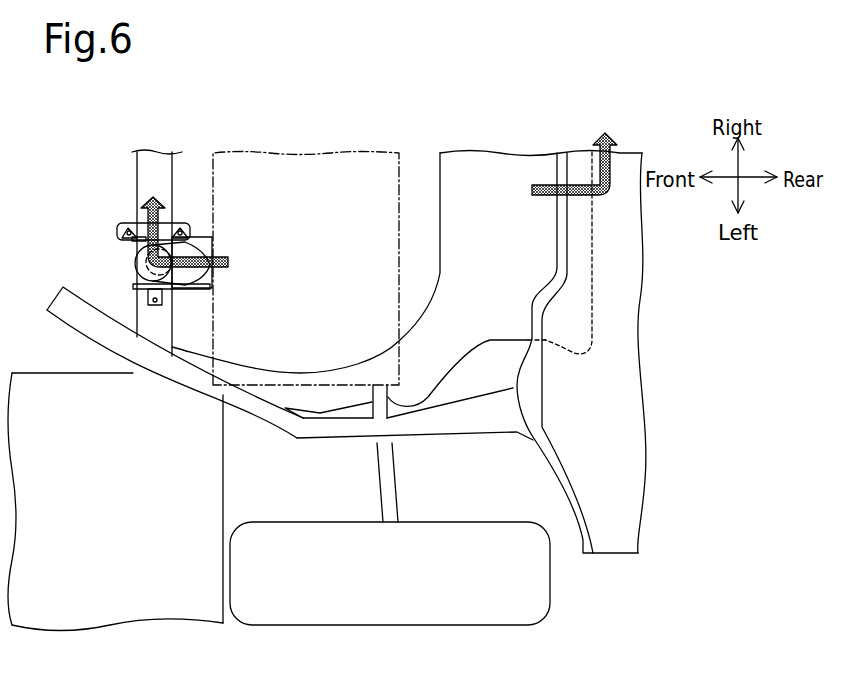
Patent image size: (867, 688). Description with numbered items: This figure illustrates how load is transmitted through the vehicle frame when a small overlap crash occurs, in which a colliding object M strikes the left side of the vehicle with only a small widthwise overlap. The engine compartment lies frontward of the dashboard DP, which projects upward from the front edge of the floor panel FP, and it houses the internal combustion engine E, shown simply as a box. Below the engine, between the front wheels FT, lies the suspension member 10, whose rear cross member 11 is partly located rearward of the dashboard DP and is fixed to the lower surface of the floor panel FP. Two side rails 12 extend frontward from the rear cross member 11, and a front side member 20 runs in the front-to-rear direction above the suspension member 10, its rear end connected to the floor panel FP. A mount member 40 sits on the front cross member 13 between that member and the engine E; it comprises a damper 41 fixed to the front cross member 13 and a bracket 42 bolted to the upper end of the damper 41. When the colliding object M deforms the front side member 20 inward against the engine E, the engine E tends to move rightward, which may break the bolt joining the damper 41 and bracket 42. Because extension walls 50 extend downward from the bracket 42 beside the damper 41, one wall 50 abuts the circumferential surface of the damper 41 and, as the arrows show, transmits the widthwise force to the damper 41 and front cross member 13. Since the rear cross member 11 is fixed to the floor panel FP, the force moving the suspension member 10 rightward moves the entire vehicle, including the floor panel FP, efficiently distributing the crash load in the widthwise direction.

The suspension member 10 is at (460, 133).
The rear cross member 11 is at (511, 165).
The side rail 12 is at (318, 413).
The front cross member 13 is at (136, 165).
The front side member 20 is at (52, 293).
The mount member 40 is at (133, 240).
The damper 41 is at (134, 266).
The bracket 42 is at (203, 236).
The extension wall 50 is at (125, 242).
The internal combustion engine E is at (312, 153).
The colliding object M is at (119, 517).
The front wheel FT is at (550, 572).
The floor panel FP is at (598, 392).
The dashboard DP is at (570, 228).